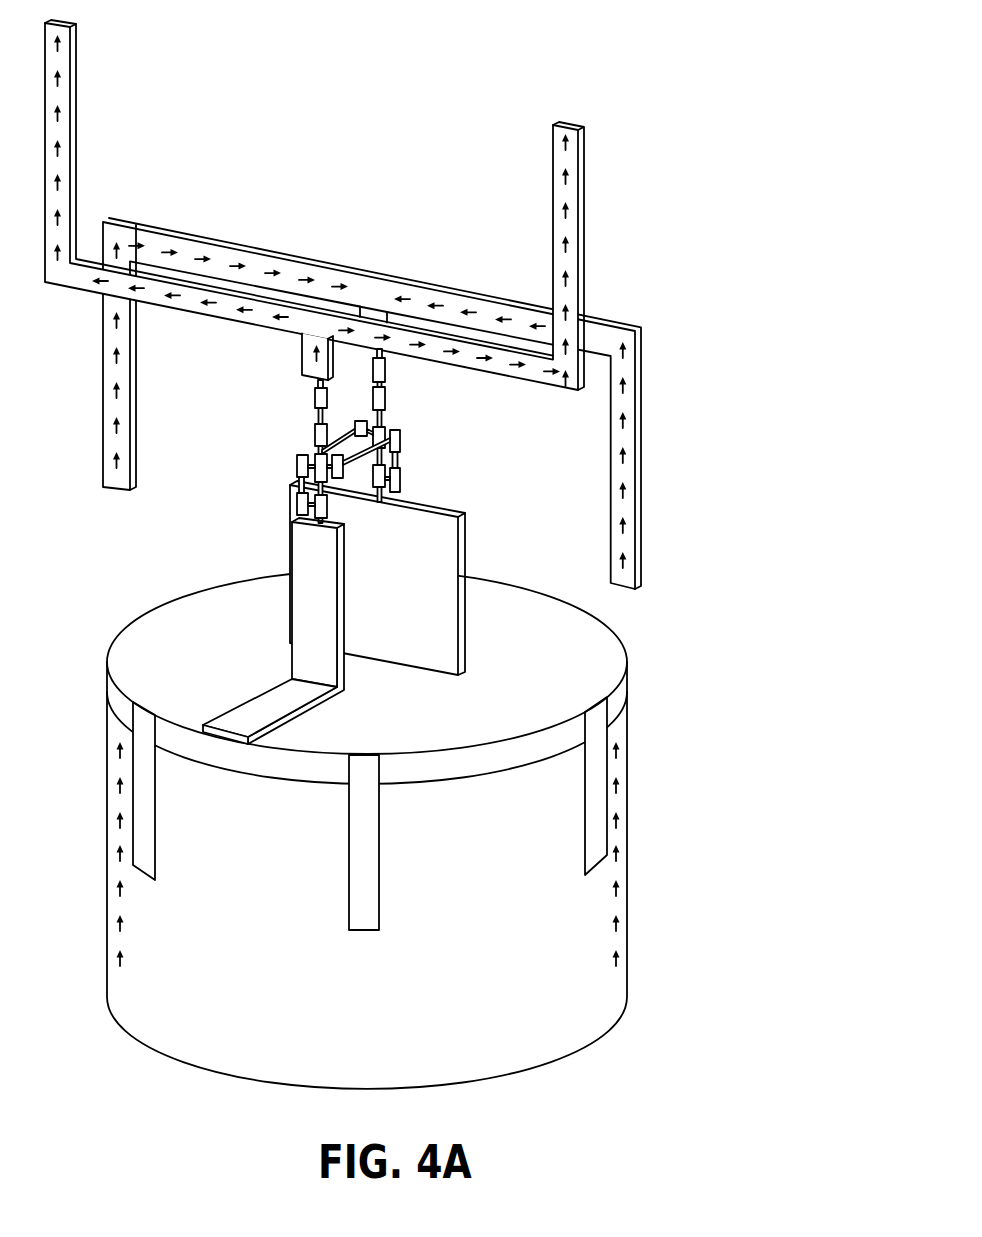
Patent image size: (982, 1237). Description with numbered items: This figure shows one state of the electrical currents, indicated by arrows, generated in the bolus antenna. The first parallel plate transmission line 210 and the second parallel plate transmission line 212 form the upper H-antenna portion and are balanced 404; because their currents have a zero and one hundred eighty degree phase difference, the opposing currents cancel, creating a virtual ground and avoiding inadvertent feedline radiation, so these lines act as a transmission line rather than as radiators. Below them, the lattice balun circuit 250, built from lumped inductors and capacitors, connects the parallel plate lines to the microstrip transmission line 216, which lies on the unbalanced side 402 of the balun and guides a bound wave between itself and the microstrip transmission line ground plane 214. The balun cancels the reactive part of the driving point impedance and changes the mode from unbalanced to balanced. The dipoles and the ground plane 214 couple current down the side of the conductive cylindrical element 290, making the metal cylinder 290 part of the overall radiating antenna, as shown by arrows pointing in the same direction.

The first parallel plate transmission line 210 is at (240, 321).
The second parallel plate transmission line 212 is at (198, 237).
The microstrip transmission line ground plane 214 is at (435, 507).
The microstrip transmission line 216 is at (310, 605).
The lattice balun circuit 250 is at (428, 456).
The conductive cylindrical element 290 is at (632, 783).
The unbalanced side 402 is at (379, 546).
The balanced 404 is at (375, 304).